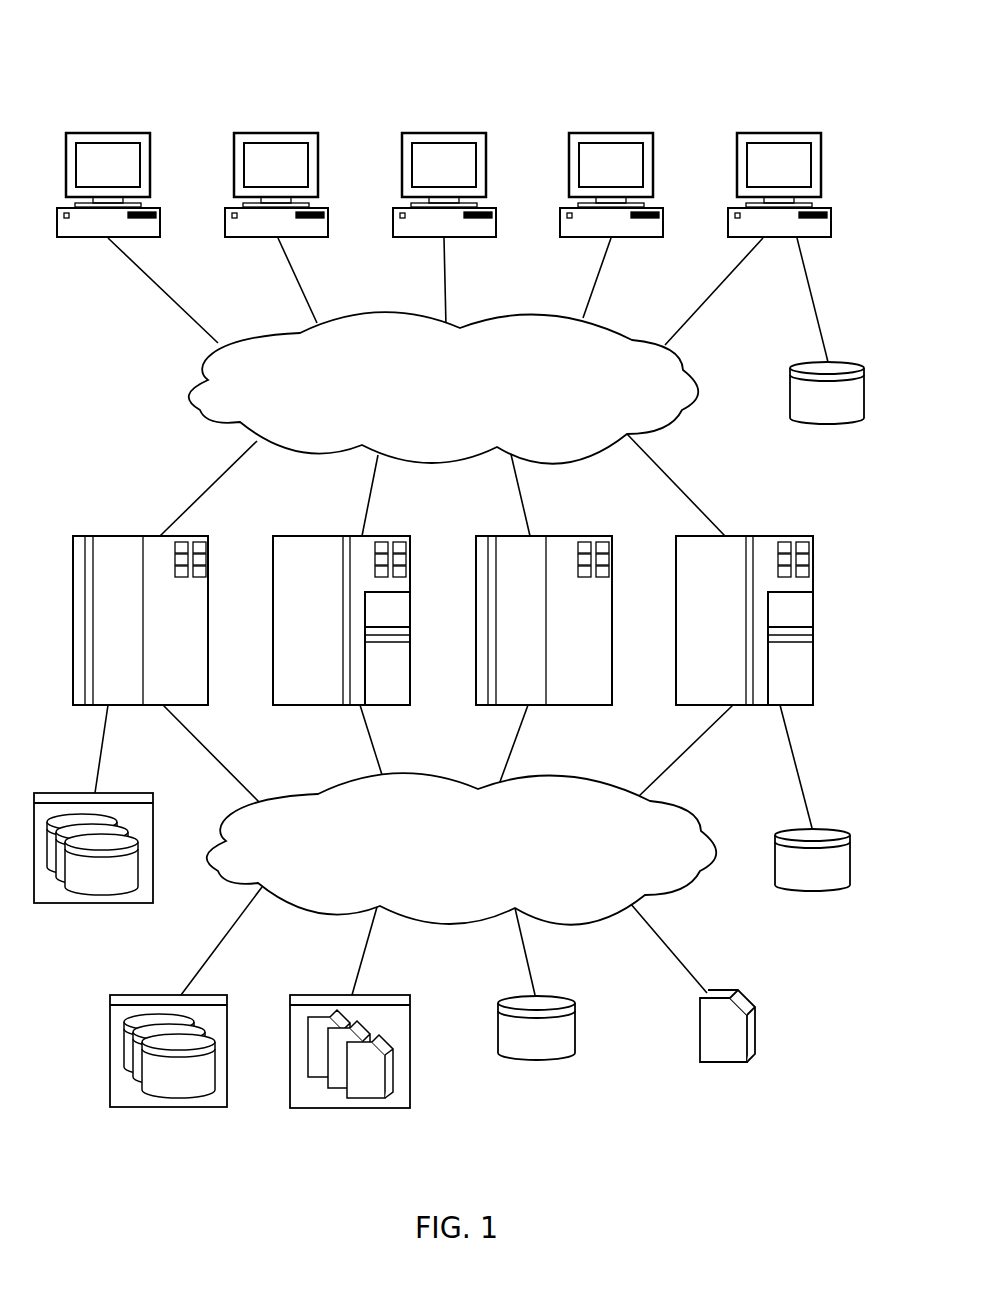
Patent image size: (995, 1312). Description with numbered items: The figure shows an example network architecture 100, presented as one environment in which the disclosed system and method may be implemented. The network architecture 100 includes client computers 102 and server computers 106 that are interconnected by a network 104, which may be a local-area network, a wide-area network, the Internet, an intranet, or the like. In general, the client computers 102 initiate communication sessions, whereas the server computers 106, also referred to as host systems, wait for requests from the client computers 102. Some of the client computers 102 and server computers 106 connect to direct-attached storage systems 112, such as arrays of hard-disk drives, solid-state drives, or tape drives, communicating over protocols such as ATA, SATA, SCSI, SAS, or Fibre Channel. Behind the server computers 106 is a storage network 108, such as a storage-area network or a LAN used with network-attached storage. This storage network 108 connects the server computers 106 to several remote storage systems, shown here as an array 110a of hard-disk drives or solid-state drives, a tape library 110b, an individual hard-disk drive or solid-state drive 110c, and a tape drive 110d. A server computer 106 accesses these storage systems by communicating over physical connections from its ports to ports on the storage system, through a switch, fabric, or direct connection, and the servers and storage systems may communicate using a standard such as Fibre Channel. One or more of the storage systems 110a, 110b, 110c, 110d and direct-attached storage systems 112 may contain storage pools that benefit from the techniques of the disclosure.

The network architecture 100 is at (180, 68).
The client computer 102 is at (444, 185).
The network 104 is at (444, 388).
The server computer 106 is at (443, 620).
The storage network 108 is at (462, 849).
The array of hard-disk drives or solid-state drives 110a is at (167, 1108).
The tape library 110b is at (348, 1109).
The individual hard-disk drive or solid-state drive 110c is at (535, 1060).
The tape drive 110d is at (720, 1063).
The direct-attached storage system 112 is at (828, 424).